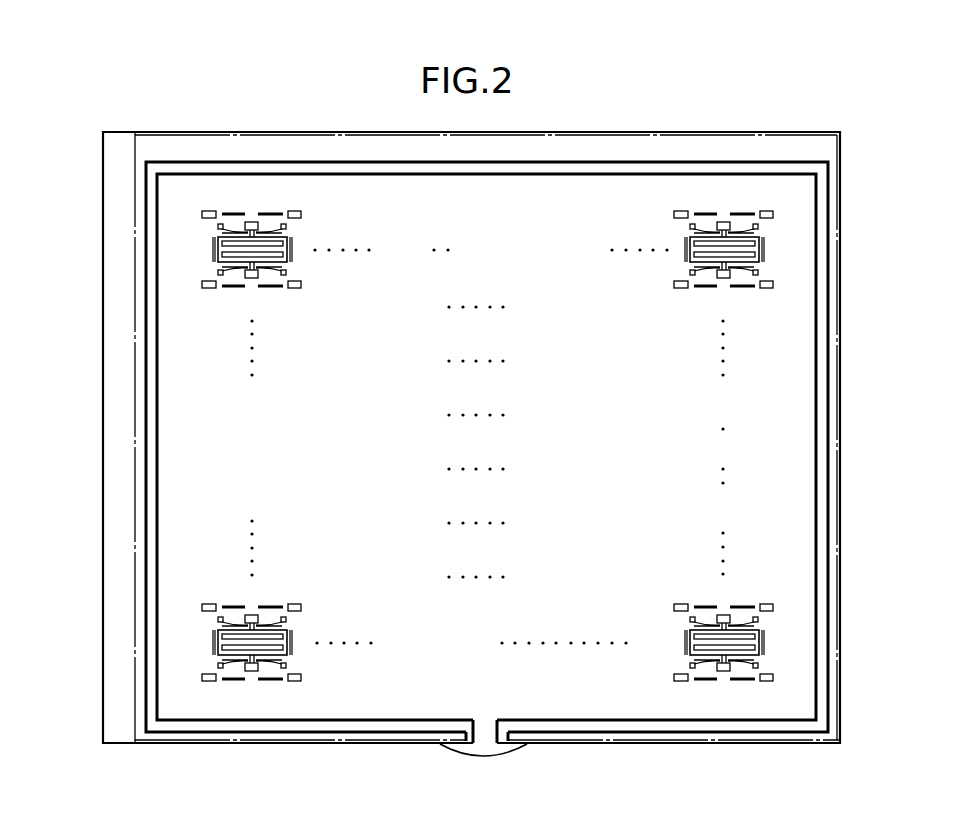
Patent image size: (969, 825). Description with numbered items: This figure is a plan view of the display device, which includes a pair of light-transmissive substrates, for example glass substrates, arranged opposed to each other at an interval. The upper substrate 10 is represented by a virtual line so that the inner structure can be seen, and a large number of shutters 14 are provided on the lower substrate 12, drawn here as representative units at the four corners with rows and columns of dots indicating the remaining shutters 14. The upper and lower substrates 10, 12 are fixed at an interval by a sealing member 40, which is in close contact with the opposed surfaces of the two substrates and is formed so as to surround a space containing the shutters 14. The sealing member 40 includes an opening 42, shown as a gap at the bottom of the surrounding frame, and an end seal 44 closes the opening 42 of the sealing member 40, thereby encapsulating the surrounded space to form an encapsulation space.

The upper substrate 10 is at (130, 483).
The lower substrate 12 is at (121, 728).
The shutters 14 is at (218, 252).
The sealing member 40 is at (300, 725).
The opening 42 is at (485, 733).
The end seal 44 is at (508, 755).